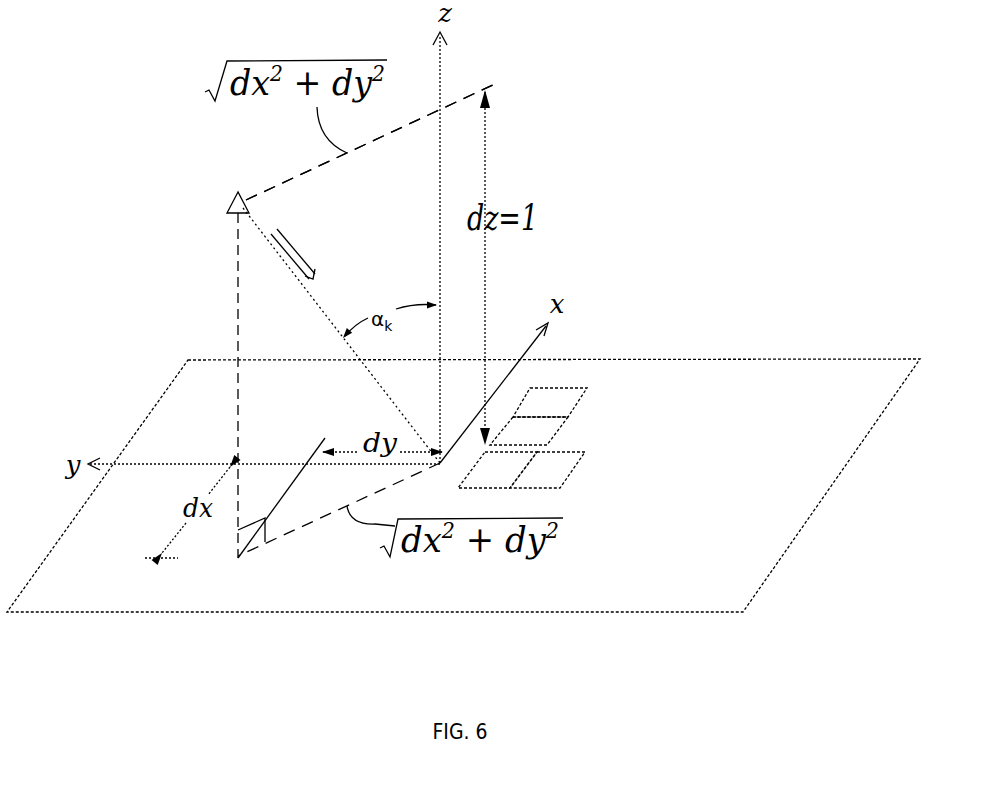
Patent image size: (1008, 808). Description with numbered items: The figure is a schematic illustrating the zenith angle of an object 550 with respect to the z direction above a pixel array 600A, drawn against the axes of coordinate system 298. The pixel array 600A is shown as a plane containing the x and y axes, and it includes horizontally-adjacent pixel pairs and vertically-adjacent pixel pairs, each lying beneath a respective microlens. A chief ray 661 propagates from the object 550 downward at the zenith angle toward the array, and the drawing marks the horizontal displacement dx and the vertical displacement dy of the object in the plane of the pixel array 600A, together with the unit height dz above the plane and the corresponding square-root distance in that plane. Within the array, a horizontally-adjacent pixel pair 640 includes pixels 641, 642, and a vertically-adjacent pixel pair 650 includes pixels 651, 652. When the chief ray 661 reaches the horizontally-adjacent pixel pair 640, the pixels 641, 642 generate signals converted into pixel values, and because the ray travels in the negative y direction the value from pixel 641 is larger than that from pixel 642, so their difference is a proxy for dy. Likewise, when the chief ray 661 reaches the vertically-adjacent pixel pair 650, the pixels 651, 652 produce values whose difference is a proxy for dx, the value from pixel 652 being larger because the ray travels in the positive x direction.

The coordinate system 298 is at (464, 65).
The object 550 is at (230, 204).
The chief ray 661 is at (291, 250).
The pixel array 600A is at (628, 359).
The vertically-adjacent pixel pair 650 is at (568, 416).
The pixel 651 is at (529, 431).
The pixel 652 is at (550, 402).
The horizontally-adjacent pixel pair 640 is at (553, 470).
The pixel 641 is at (547, 470).
The pixel 642 is at (497, 470).